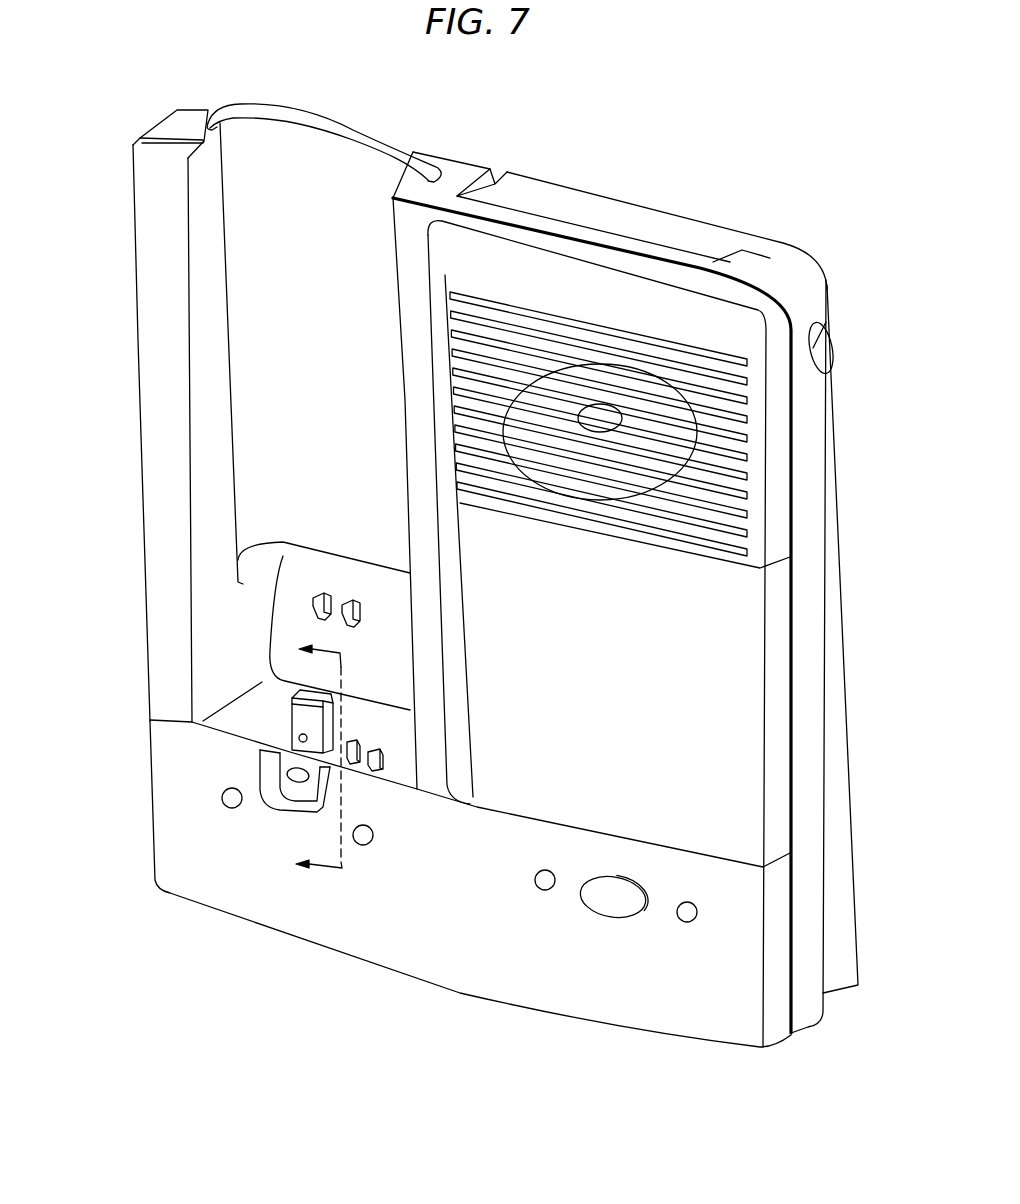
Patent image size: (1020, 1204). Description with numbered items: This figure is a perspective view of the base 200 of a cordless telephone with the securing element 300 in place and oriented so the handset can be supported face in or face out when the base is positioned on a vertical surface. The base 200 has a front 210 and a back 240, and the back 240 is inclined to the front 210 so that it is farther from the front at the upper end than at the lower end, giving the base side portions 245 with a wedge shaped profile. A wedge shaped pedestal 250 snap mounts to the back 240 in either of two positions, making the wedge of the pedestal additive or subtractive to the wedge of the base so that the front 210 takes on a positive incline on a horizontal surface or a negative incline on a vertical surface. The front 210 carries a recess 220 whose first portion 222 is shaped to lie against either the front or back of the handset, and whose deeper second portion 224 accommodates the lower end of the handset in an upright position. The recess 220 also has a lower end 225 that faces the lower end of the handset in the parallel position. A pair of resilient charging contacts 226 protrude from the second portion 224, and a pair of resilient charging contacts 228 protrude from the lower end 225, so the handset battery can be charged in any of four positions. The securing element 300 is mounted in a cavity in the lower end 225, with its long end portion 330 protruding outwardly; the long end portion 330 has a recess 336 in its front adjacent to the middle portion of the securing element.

The base 200 is at (497, 575).
The front 210 is at (735, 685).
The recess 220 is at (217, 385).
The first portion 222 is at (267, 285).
The second portion 224 is at (403, 612).
The lower end 225 is at (388, 778).
The charging contacts 226 is at (359, 595).
The charging contacts 228 is at (355, 748).
The back 240 is at (797, 268).
The side portions 245 is at (831, 433).
The pedestal 250 is at (853, 858).
The securing element 300 is at (284, 755).
The long end portion 330 is at (330, 717).
The recess 336 is at (305, 743).